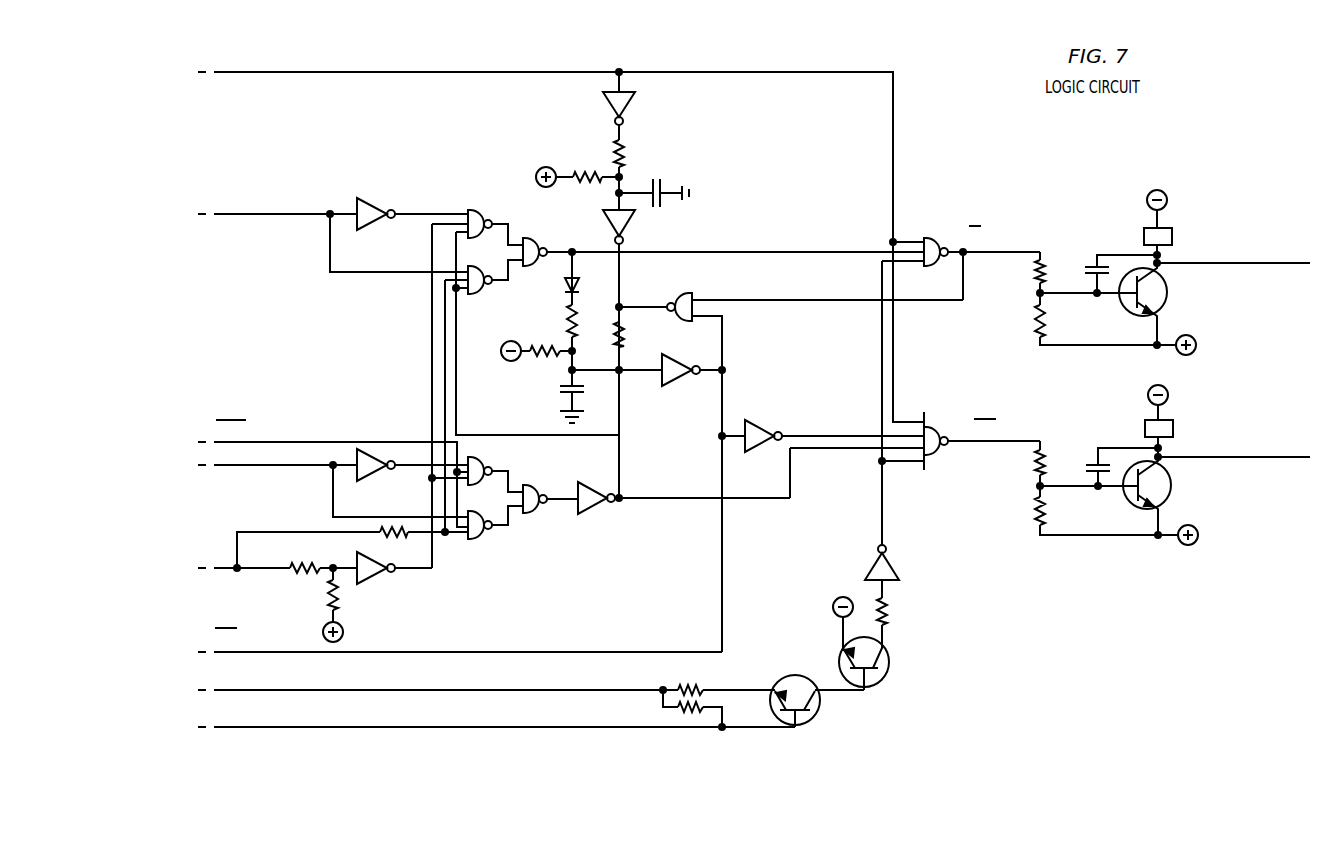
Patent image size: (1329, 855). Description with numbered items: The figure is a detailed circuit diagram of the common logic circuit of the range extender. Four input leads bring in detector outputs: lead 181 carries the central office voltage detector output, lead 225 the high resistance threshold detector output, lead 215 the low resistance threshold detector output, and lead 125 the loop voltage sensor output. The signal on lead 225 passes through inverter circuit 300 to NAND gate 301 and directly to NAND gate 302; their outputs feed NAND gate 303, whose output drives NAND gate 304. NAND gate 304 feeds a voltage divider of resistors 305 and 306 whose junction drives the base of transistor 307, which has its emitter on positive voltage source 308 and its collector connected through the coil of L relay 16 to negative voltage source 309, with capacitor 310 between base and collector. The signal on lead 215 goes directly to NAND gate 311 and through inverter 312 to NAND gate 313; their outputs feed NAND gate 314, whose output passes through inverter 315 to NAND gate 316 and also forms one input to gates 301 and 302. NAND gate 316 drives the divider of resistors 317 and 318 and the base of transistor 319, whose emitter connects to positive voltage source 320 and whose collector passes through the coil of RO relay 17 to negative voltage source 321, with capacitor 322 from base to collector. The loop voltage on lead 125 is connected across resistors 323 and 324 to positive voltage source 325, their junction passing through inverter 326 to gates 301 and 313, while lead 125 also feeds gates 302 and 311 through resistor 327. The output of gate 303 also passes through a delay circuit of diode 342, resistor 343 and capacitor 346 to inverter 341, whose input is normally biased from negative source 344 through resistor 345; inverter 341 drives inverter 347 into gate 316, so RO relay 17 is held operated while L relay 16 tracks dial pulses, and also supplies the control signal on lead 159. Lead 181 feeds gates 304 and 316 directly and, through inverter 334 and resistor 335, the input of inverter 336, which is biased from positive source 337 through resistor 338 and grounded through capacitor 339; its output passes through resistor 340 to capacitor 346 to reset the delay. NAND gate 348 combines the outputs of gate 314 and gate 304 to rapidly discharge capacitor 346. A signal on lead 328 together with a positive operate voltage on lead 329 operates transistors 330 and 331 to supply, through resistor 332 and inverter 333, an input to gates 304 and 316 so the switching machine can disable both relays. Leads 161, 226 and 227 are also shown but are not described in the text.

The lead 181 is at (251, 78).
The lead 225 is at (333, 231).
The inverter circuit 300 is at (357, 203).
The NAND gate 301 is at (490, 208).
The NAND gate 302 is at (480, 297).
The NAND gate 303 is at (530, 240).
The NAND gate 304 is at (921, 234).
The resistor 305 is at (1024, 272).
The resistor 306 is at (1089, 319).
The transistor 307 is at (1169, 292).
The positive voltage source 308 is at (1185, 332).
The negative voltage source 309 is at (1155, 198).
The capacitor 310 is at (1100, 274).
The L relay 16 is at (1172, 230).
The L output line 227 is at (1272, 268).
The NAND gate 316 is at (932, 456).
The resistor 317 is at (1024, 463).
The resistor 318 is at (1090, 510).
The transistor 319 is at (1169, 485).
The positive voltage source 320 is at (1205, 535).
The negative voltage source 321 is at (1155, 392).
The capacitor 322 is at (1100, 467).
The RO relay 17 is at (1173, 422).
The R output line 226 is at (1274, 462).
The inverter 334 is at (634, 102).
The resistor 335 is at (635, 158).
The inverter 336 is at (634, 240).
The positive voltage source 337 is at (550, 164).
The resistor 338 is at (596, 162).
The capacitor 339 is at (664, 174).
The resistor 340 is at (636, 334).
The inverter 341 is at (662, 384).
The diode 342 is at (558, 278).
The resistor 343 is at (557, 338).
The negative source 344 is at (500, 351).
The resistor 345 is at (551, 363).
The capacitor 346 is at (587, 396).
The inverter 347 is at (754, 424).
The NAND gate 348 is at (677, 294).
The SCD line 161 is at (322, 442).
The input lead 215 is at (258, 477).
The inverter 312 is at (368, 476).
The NAND gate 313 is at (478, 465).
The NAND gate 314 is at (538, 514).
The inverter 315 is at (590, 511).
The NAND gate 311 is at (478, 540).
The input lead 125 is at (258, 578).
The resistor 323 is at (323, 556).
The resistor 324 is at (347, 595).
The positive voltage source 325 is at (350, 633).
The inverter 326 is at (375, 582).
The resistor 327 is at (412, 544).
The lead 159 is at (314, 654).
The lead 329 is at (317, 688).
The lead 328 is at (317, 726).
The transistor 330 is at (822, 716).
The transistor 331 is at (889, 678).
The resistor 332 is at (902, 602).
The inverter 333 is at (898, 562).